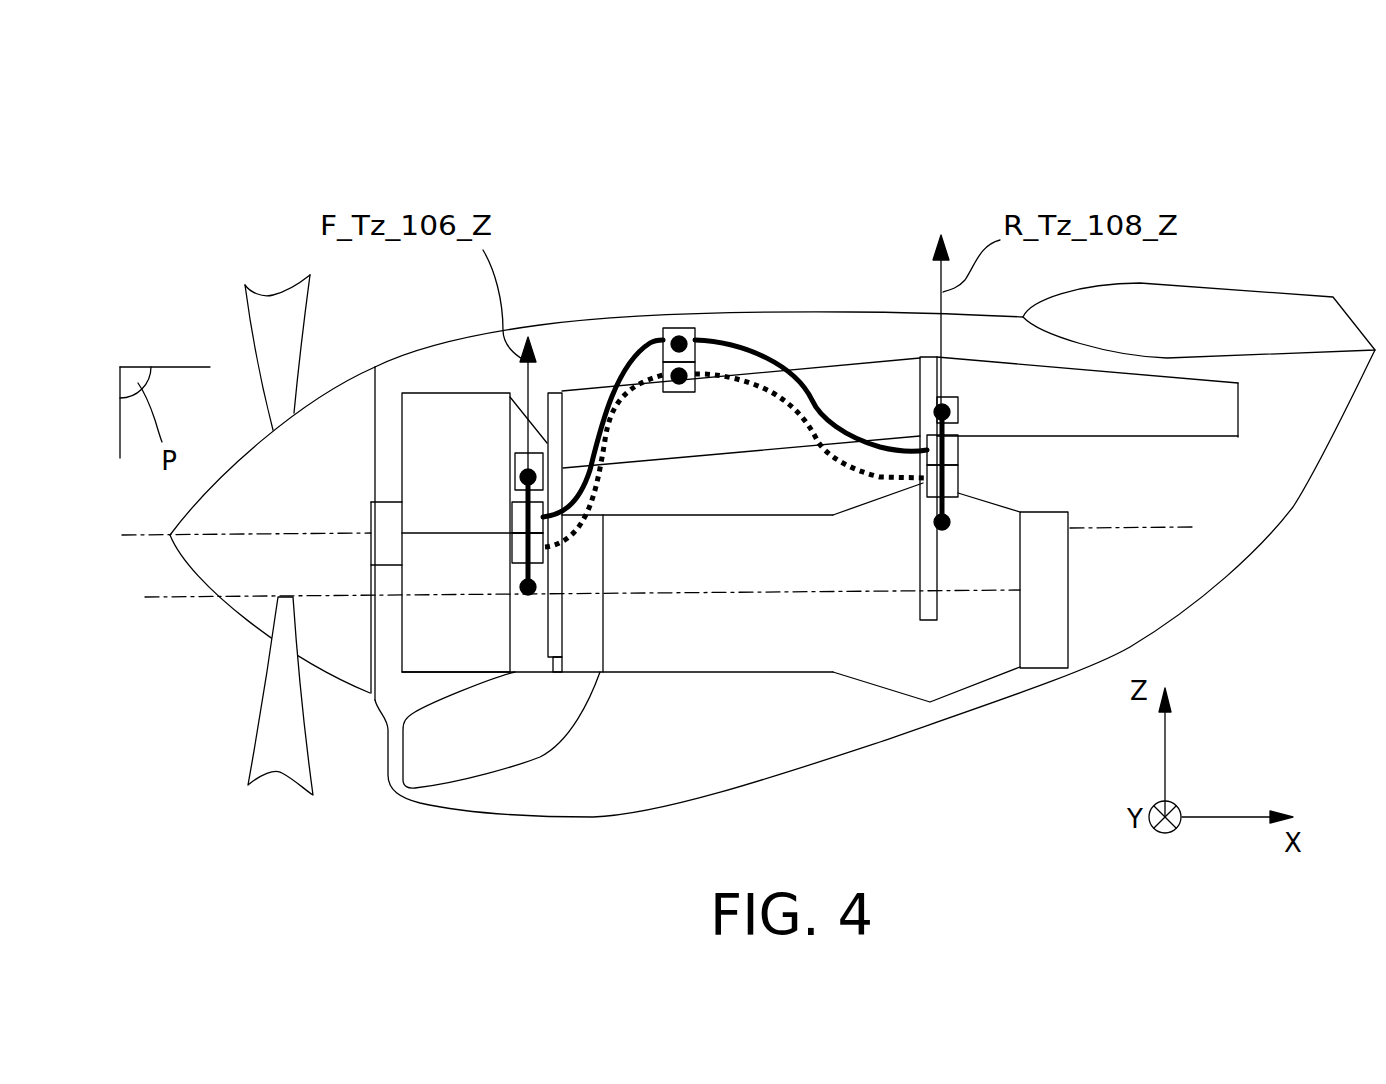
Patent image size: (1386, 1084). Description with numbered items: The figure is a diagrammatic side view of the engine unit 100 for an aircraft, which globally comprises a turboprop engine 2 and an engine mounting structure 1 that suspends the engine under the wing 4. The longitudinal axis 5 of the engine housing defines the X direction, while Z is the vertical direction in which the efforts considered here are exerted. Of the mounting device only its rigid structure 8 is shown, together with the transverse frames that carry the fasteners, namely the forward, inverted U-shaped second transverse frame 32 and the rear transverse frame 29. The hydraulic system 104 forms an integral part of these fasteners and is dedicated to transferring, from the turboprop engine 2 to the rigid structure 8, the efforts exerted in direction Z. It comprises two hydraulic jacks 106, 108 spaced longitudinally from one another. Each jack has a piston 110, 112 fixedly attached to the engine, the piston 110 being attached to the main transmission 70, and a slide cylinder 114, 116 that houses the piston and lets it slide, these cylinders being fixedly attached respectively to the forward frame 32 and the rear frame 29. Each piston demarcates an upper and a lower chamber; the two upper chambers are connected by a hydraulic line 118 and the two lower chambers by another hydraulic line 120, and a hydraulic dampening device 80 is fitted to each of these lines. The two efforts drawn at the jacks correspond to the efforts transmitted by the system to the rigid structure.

The engine mounting structure 1 is at (874, 356).
The turboprop engine 2 is at (804, 678).
The wing 4 is at (1233, 280).
The longitudinal axis 5 is at (177, 598).
The rigid structure 8 is at (1225, 442).
The rear transverse frame 29 is at (932, 622).
The second transverse frame 32 is at (560, 637).
The main transmission 70 is at (428, 407).
The hydraulic dampening device 80 is at (684, 327).
The engine unit 100 is at (520, 190).
The hydraulic system 104 is at (720, 337).
The hydraulic jack 106 is at (498, 527).
The hydraulic jack 108 is at (975, 473).
The piston 110 is at (523, 552).
The piston 112 is at (950, 513).
The slide cylinder 114 is at (511, 508).
The slide cylinder 116 is at (960, 450).
The hydraulic line 118 is at (631, 356).
The hydraulic line 120 is at (630, 398).